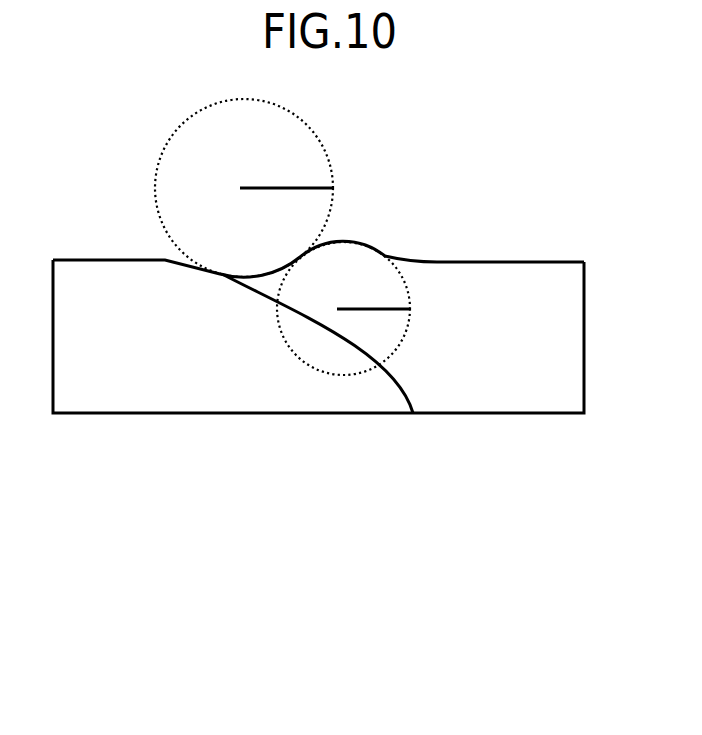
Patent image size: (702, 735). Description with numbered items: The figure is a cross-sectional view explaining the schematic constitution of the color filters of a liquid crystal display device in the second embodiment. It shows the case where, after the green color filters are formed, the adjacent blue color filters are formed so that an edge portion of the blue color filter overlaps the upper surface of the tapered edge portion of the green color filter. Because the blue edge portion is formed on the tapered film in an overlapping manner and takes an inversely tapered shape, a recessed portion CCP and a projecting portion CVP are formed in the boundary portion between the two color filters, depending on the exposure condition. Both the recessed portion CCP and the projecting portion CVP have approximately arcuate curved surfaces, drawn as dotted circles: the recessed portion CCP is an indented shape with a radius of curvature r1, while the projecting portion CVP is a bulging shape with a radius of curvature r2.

The radius of curvature r1 is at (290, 178).
The radius of curvature r2 is at (373, 295).
The projecting portion CVP is at (352, 243).
The recessed portion CCP is at (262, 279).